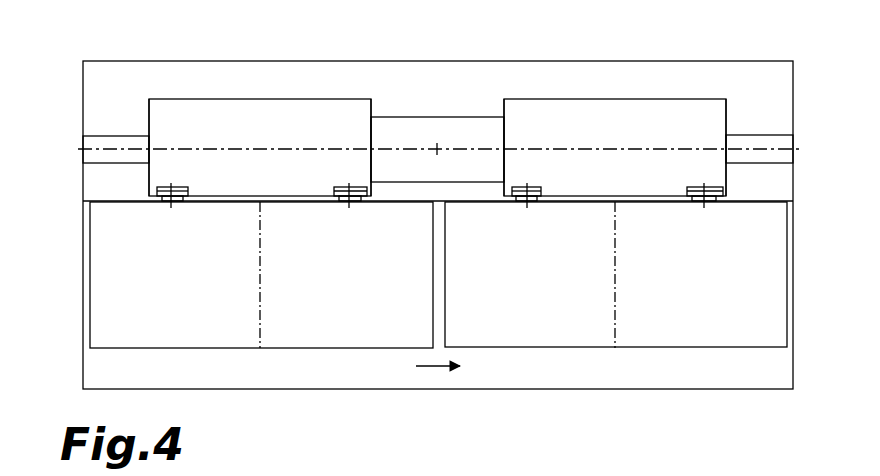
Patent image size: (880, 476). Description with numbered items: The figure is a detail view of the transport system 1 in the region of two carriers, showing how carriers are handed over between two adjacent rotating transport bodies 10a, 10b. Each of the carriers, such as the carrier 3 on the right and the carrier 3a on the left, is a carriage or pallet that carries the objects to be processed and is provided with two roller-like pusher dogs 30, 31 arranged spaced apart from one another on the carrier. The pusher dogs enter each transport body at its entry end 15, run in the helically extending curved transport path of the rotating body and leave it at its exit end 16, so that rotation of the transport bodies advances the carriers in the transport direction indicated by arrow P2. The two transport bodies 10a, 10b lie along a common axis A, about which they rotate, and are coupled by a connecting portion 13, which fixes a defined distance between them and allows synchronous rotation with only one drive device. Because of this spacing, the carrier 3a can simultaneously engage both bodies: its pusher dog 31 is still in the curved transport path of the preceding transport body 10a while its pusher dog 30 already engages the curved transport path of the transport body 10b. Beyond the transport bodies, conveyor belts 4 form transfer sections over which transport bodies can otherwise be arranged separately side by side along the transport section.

The transport system 1 is at (357, 380).
The carrier 3 is at (580, 333).
The carrier 3a is at (126, 315).
The conveyor belt 4 is at (110, 136).
The transport body 10a is at (268, 110).
The transport body 10b is at (637, 113).
The connecting portion 13 is at (436, 122).
The entry end 15 is at (151, 96).
The exit end 16 is at (368, 96).
The roller-like pusher dog 30 is at (350, 196).
The roller-like pusher dog 31 is at (156, 192).
The axis A is at (782, 148).
The arrow indicating transport direction P2 is at (435, 368).